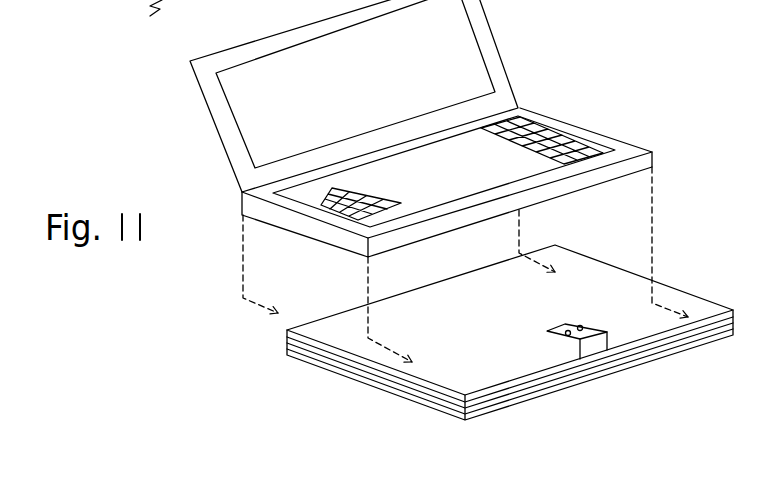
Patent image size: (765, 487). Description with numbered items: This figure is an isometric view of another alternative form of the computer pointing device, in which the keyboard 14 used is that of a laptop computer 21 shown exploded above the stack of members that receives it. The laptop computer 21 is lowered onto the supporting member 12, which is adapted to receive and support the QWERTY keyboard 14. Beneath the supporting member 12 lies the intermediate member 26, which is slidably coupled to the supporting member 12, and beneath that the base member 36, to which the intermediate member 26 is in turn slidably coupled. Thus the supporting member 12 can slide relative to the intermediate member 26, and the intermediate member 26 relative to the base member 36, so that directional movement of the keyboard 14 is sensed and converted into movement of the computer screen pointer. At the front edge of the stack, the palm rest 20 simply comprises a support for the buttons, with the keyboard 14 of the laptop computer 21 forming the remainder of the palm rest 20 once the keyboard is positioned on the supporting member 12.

The supporting member 12 is at (292, 352).
The QWERTY computer keyboard 14 is at (584, 120).
The palm rest 20 is at (593, 346).
The laptop computer 21 is at (498, 37).
The intermediate member 26 is at (347, 365).
The base member 36 is at (382, 385).